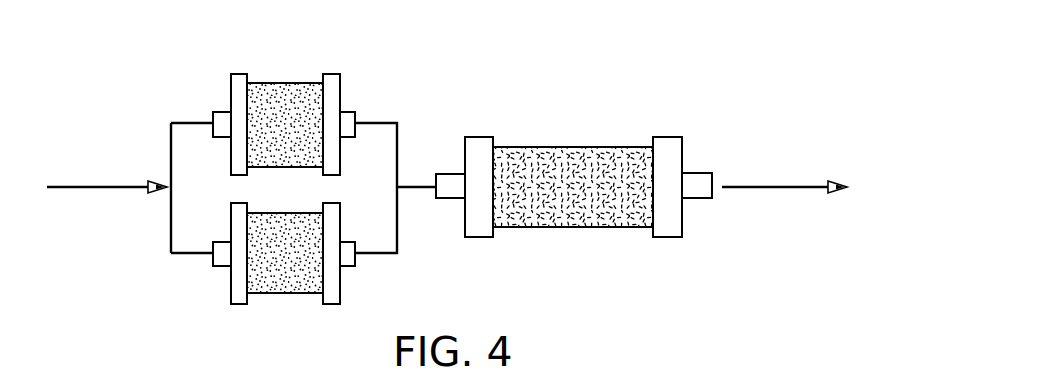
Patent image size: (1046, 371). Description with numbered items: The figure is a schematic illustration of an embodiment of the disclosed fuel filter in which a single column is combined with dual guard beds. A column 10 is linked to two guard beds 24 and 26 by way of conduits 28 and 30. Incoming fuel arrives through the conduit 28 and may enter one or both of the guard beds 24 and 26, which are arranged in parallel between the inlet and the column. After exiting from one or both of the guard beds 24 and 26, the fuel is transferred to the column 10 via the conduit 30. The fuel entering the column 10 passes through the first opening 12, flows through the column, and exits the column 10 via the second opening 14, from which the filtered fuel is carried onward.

The column 10 is at (572, 147).
The first opening 12 is at (453, 200).
The second opening 14 is at (697, 200).
The guard bed 24 is at (283, 83).
The guard bed 26 is at (288, 293).
The conduit 28 is at (93, 187).
The conduit 30 is at (415, 183).